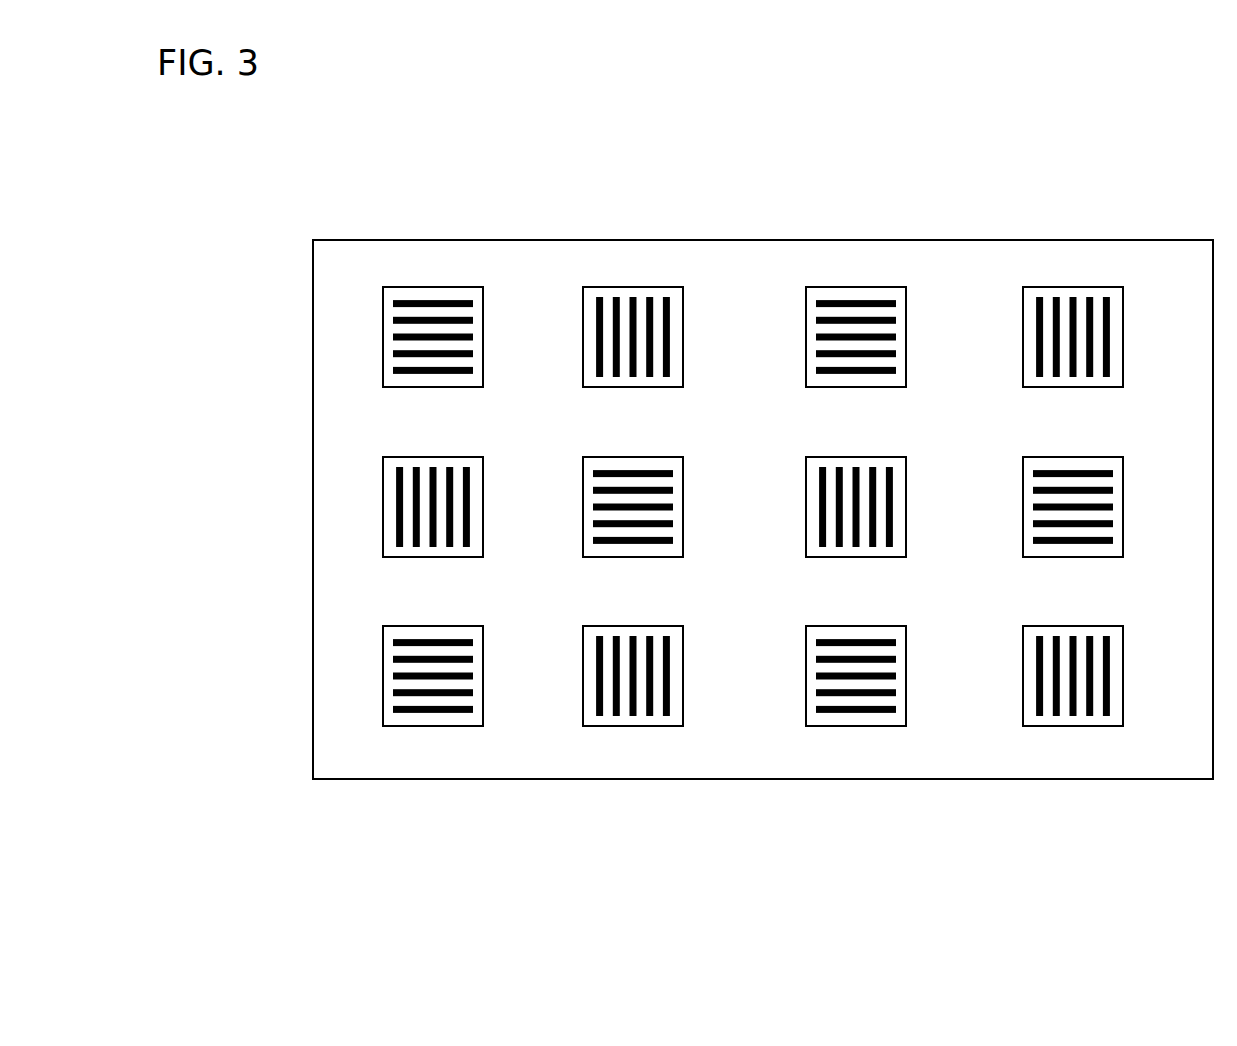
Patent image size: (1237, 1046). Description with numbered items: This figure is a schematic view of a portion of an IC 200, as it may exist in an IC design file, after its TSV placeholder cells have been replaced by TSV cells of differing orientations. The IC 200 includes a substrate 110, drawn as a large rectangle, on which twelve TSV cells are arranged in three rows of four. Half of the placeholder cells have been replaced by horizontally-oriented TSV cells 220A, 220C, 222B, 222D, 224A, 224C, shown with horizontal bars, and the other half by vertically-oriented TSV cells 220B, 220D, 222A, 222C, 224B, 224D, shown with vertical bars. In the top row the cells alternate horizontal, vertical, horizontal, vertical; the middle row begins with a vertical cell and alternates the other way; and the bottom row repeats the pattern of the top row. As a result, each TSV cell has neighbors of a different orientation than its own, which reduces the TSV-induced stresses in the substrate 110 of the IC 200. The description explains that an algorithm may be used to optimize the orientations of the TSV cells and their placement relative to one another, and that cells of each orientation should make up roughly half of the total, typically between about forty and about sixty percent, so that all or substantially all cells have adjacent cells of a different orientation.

The substrate 110 is at (359, 254).
The IC 200 is at (743, 157).
The horizontally-oriented TSV cell 220A is at (431, 287).
The vertically-oriented TSV cell 220B is at (627, 287).
The horizontally-oriented TSV cell 220C is at (857, 287).
The vertically-oriented TSV cell 220D is at (1073, 287).
The vertically-oriented TSV cell 222A is at (383, 495).
The horizontally-oriented TSV cell 222B is at (584, 471).
The vertically-oriented TSV cell 222C is at (808, 473).
The horizontally-oriented TSV cell 222D is at (1023, 475).
The horizontally-oriented TSV cell 224A is at (383, 656).
The vertically-oriented TSV cell 224B is at (638, 726).
The horizontally-oriented TSV cell 224C is at (852, 726).
The vertically-oriented TSV cell 224D is at (1069, 725).